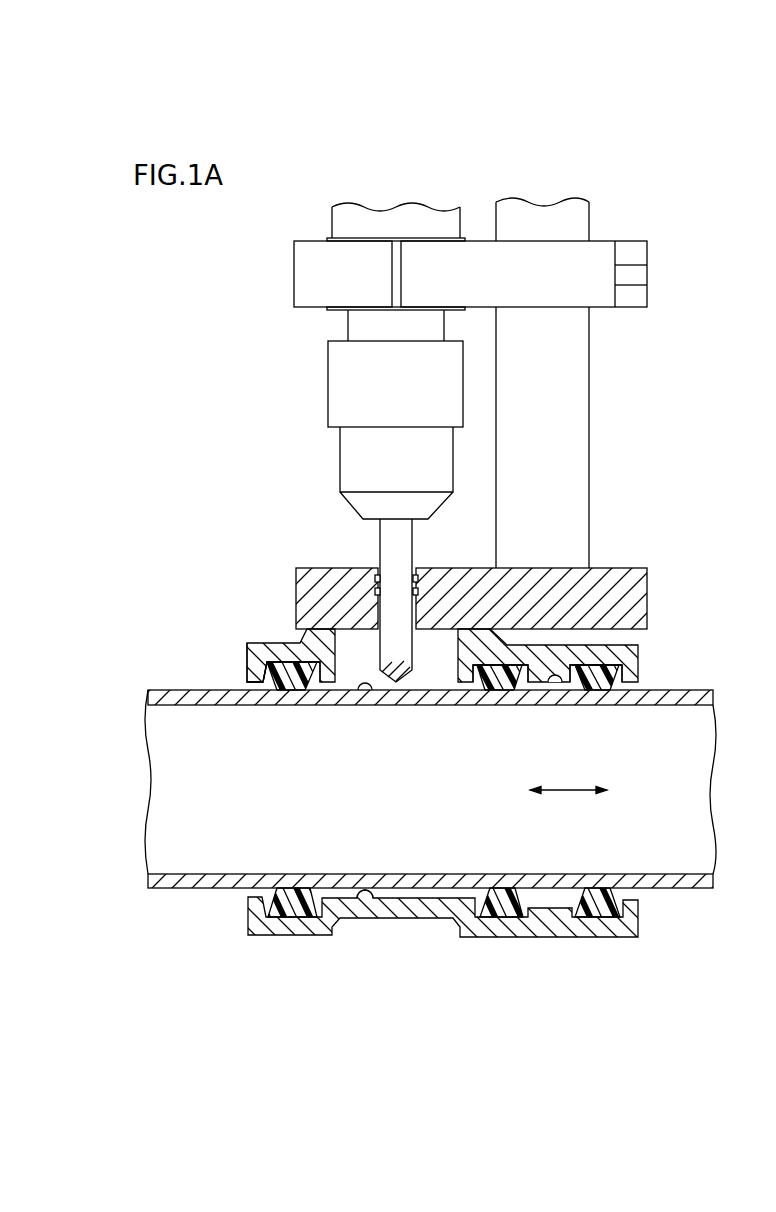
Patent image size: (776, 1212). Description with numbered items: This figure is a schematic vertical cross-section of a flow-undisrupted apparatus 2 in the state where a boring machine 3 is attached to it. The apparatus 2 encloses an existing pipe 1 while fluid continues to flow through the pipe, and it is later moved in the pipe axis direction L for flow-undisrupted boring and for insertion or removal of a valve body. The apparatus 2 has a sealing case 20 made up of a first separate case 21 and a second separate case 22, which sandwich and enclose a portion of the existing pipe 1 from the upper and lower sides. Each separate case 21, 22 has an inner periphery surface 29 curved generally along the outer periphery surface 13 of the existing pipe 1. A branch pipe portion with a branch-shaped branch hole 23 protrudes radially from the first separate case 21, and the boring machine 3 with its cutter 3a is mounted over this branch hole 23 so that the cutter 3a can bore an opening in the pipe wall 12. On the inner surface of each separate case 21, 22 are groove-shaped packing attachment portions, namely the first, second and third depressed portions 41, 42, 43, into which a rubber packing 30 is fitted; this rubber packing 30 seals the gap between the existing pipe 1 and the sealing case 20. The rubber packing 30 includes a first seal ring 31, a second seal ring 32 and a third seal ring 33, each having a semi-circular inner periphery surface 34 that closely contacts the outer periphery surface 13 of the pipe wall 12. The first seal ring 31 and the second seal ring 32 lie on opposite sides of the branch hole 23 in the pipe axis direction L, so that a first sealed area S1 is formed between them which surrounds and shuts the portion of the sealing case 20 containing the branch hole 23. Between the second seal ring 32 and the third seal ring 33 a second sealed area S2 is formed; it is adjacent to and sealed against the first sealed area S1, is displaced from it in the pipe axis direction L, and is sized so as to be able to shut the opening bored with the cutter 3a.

The existing pipe 1 is at (178, 688).
The present apparatus 2 is at (253, 333).
The boring machine 3 is at (342, 389).
The cutter 3a is at (403, 684).
The pipe wall 12 is at (364, 693).
The outer periphery surface 13 is at (670, 692).
The sealing case 20 is at (257, 647).
The first separate case 21 is at (247, 663).
The second separate case 22 is at (248, 921).
The branch hole 23 is at (305, 585).
The inner periphery surface 29 is at (560, 681).
The rubber packing 30 is at (255, 690).
The first seal ring 31 is at (297, 691).
The second seal ring 32 is at (494, 698).
The third seal ring 33 is at (605, 690).
The inner periphery surface 34 is at (288, 693).
The first depressed portion 41 is at (278, 662).
The second depressed portion 42 is at (498, 667).
The third depressed portion 43 is at (638, 648).
The first sealed area S1 is at (338, 638).
The second sealed area S2 is at (540, 680).
The pipe axis direction L is at (568, 776).